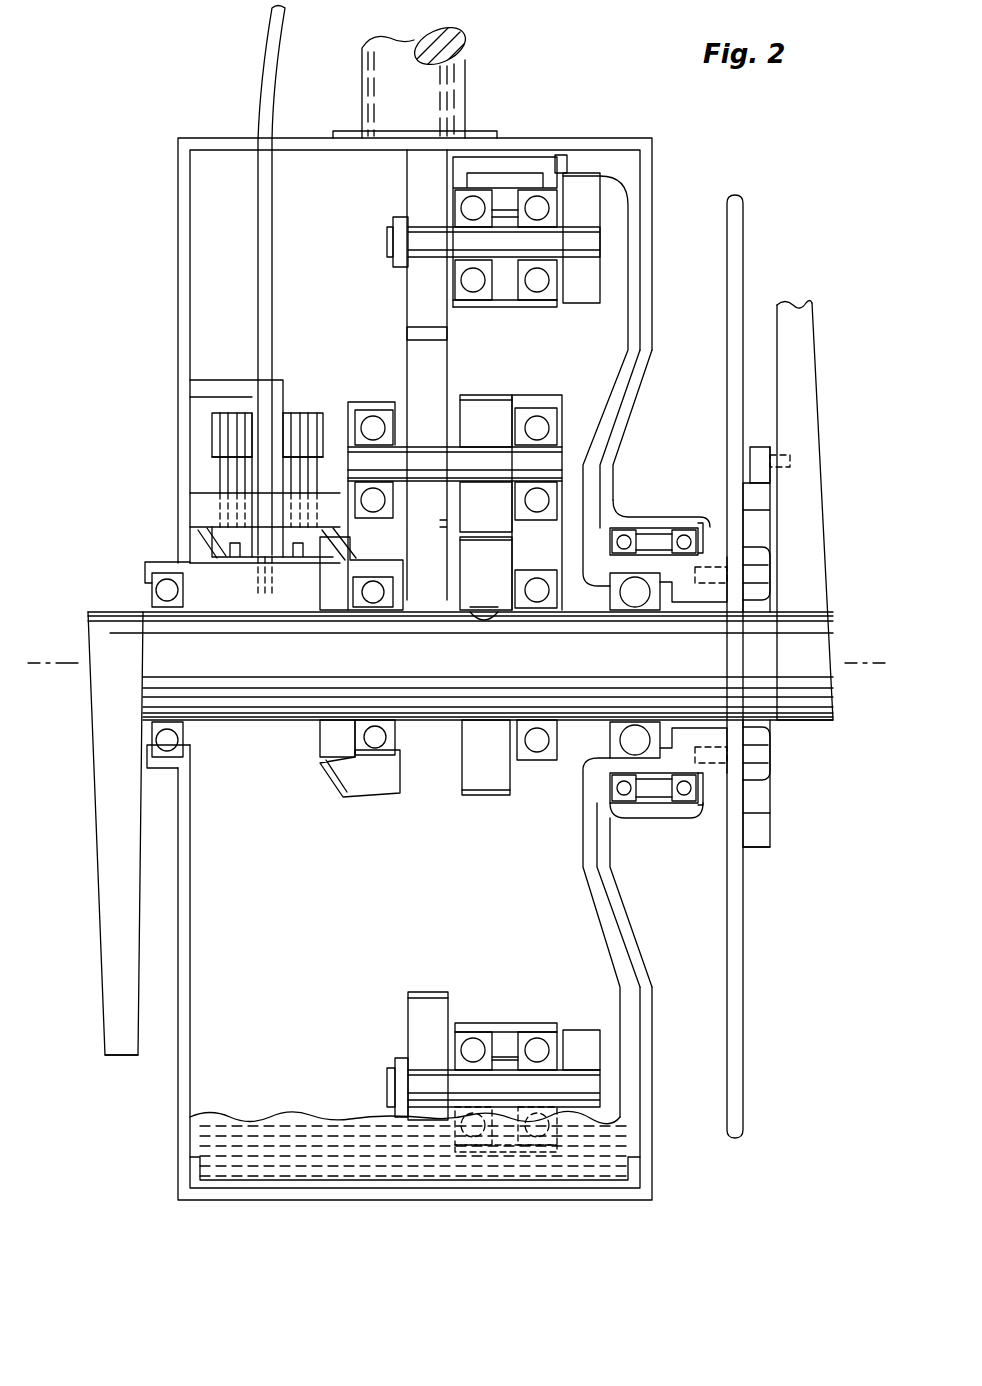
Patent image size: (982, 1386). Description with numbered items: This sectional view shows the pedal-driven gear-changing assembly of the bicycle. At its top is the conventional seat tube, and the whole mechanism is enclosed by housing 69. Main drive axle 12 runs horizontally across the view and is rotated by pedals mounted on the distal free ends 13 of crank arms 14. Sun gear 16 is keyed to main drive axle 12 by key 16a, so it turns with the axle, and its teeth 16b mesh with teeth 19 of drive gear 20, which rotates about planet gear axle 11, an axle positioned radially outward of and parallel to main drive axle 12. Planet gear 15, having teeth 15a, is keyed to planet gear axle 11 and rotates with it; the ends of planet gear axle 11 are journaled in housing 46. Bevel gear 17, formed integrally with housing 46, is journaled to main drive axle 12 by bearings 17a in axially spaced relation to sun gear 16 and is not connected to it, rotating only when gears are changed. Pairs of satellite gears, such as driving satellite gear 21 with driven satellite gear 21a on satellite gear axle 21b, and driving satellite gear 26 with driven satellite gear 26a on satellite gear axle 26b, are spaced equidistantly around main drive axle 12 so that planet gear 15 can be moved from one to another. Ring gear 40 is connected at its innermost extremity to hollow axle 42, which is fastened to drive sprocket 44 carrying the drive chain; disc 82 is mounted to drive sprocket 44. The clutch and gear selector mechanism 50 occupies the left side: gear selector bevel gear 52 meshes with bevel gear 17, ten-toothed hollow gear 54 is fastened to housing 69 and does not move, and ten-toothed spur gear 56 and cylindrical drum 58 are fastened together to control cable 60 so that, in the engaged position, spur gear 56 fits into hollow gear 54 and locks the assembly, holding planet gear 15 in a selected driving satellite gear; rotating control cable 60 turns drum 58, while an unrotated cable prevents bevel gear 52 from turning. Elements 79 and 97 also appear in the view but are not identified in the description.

The planet gear axle 11 is at (470, 100).
The main drive axle 12 is at (400, 670).
The distal free ends of crank arms 13 is at (107, 1040).
The crank arms 14 is at (805, 400).
The planet gear 15 is at (435, 372).
The teeth of planet gear 15a is at (428, 333).
The sun gear 16 is at (478, 568).
The key 16a is at (480, 615).
The teeth of sun gear 16b is at (482, 800).
The bevel gear 17 is at (378, 770).
The bearings 17a is at (373, 738).
The teeth of drive gear 19 is at (482, 530).
The drive gear 20 is at (482, 412).
The driving satellite gear 21 is at (423, 290).
The driven satellite gear 21a is at (585, 207).
The satellite gear axle 21b is at (465, 243).
The driving satellite gear 26 is at (425, 1022).
The driven satellite gear 26a is at (578, 1058).
The satellite gear axle 26b is at (445, 1095).
The ring gear 40 is at (612, 362).
The hollow axle 42 is at (718, 553).
The drive sprocket 44 is at (726, 383).
The housing 46 is at (348, 415).
The clutch and gear selector mechanism 50 is at (172, 383).
The gear selector bevel gear 52 is at (200, 540).
The ten-toothed hollow gear 54 is at (212, 498).
The ten-toothed spur gear 56 is at (222, 470).
The cylindrical drum 58 is at (215, 443).
The control cable 60 is at (272, 280).
The housing 69 is at (186, 262).
The bolt block 79 is at (763, 828).
The disc 82 is at (775, 763).
The fastener 97 is at (745, 352).